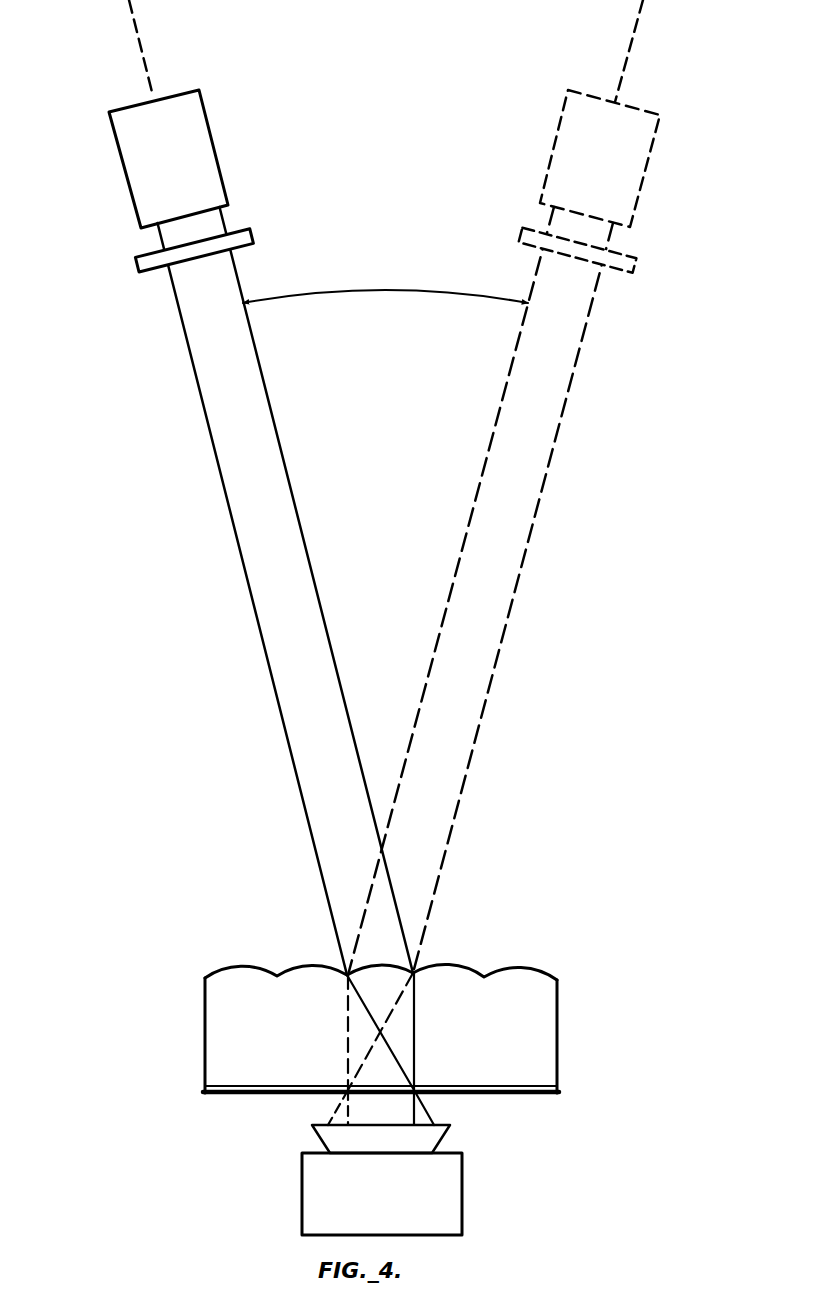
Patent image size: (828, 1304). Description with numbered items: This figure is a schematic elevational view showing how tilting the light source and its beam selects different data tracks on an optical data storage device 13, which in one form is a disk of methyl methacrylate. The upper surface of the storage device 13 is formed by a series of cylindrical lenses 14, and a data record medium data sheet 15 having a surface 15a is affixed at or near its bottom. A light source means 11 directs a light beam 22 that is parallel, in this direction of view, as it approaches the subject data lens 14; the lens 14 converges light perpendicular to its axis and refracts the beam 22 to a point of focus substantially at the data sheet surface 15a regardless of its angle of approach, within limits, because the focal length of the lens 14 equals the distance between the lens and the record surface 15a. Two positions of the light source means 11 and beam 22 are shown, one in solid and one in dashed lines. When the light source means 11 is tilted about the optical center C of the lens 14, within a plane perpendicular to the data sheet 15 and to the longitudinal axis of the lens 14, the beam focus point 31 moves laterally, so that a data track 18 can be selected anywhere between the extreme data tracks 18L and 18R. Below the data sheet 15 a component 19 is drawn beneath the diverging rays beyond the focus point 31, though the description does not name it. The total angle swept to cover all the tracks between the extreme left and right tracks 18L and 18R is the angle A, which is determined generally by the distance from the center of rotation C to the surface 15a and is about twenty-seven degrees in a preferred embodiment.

The light source means 11 is at (205, 150).
The light beam 22 is at (257, 400).
The angle A is at (390, 287).
The optical data storage device 13 is at (561, 983).
The cylindrical lens 14 is at (357, 971).
The surface 15a is at (533, 1086).
The data record medium data sheet 15 is at (558, 1092).
The data track 18 is at (383, 1075).
The extreme left data track 18L is at (347, 1085).
The extreme right data track 18R is at (416, 1085).
The beam focus point 31 is at (336, 1097).
The detector 19 is at (452, 1177).
The optical center C is at (407, 970).